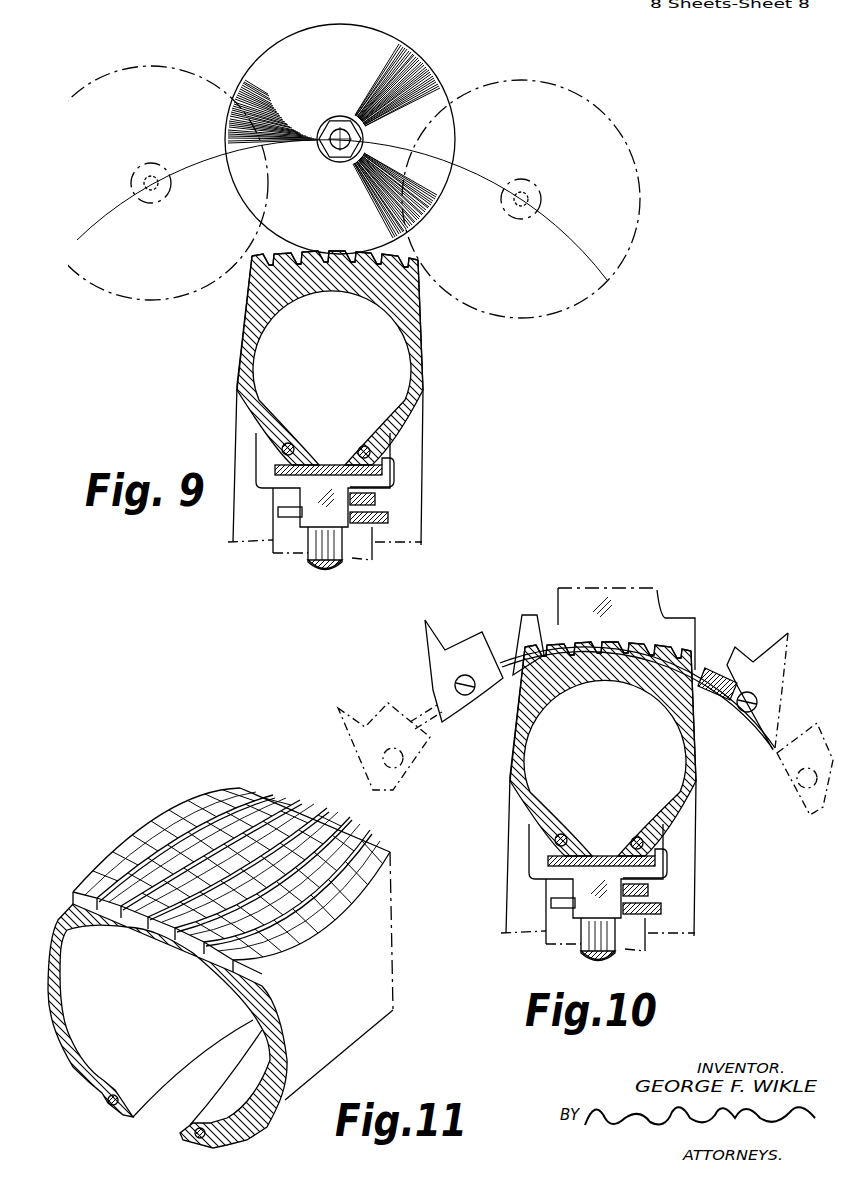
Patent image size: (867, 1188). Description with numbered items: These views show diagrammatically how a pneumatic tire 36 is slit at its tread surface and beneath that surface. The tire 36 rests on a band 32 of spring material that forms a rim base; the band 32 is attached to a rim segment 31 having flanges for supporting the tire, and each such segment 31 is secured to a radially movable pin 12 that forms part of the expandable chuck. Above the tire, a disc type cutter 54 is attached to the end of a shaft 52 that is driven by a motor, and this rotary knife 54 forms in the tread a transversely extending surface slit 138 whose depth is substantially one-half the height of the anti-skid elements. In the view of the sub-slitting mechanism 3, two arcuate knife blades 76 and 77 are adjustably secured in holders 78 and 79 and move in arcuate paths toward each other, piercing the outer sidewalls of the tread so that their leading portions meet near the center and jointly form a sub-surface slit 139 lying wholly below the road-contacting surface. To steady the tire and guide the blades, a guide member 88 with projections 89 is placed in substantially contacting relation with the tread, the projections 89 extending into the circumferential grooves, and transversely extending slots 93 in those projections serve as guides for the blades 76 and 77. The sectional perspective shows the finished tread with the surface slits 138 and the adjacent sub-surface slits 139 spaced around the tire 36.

In FIG. 9, the disc type cutter 54 is at (268, 60).
In FIG. 9, the shaft 52 is at (343, 137).
In FIG. 9, the surface slit 138 is at (400, 261).
In FIG. 11, the surface slit 138 is at (297, 920).
In FIG. 9, the tire 36 is at (424, 366).
In FIG. 10, the tire 36 is at (695, 773).
In FIG. 11, the tire 36 is at (358, 983).
In FIG. 9, the tread sub-surface slitting or sub-slitting mechanism 3 is at (392, 462).
In FIG. 9, the band 32 is at (383, 478).
In FIG. 10, the band 32 is at (633, 870).
In FIG. 9, the radially movable pins 12 is at (316, 555).
In FIG. 10, the radially movable pins 12 is at (590, 945).
In FIG. 10, the guide member 88 is at (557, 625).
In FIG. 10, the projections 89 is at (540, 625).
In FIG. 10, the transversely extending slots 93 is at (647, 637).
In FIG. 10, the holder 78 is at (473, 650).
In FIG. 10, the holder 79 is at (752, 662).
In FIG. 10, the arcuate knife blade 76 is at (505, 680).
In FIG. 10, the arcuate knife blade 77 is at (703, 680).
In FIG. 10, the rim segment 31 is at (657, 858).
In FIG. 11, the sub-surface slit 139 is at (307, 928).